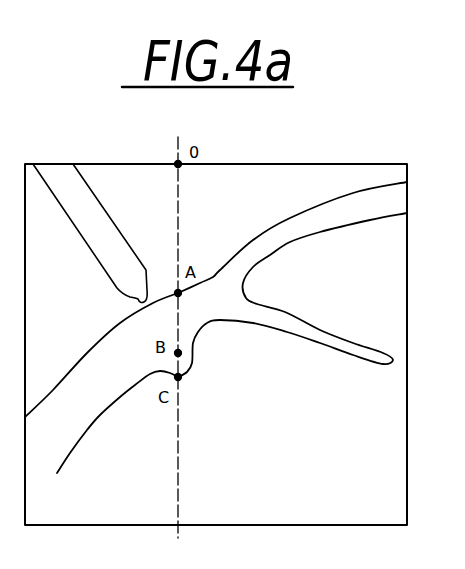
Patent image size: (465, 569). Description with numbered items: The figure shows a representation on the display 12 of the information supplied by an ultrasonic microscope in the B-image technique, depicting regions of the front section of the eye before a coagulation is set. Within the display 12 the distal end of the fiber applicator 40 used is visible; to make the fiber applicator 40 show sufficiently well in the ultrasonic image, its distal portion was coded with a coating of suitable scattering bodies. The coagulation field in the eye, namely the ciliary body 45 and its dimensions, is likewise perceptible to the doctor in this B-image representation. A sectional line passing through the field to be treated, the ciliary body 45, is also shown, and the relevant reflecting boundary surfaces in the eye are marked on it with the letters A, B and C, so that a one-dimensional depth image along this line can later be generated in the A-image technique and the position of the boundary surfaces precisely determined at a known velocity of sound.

The display 12 is at (335, 158).
The fiber applicator 40 is at (100, 230).
The ciliary body 45 is at (197, 372).